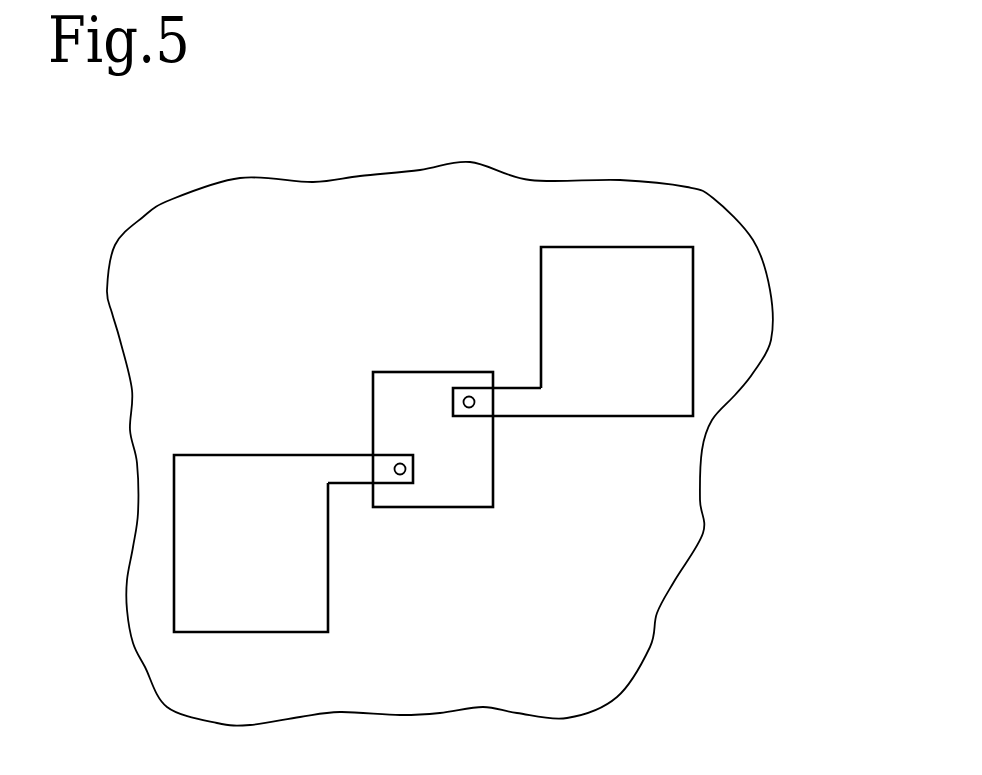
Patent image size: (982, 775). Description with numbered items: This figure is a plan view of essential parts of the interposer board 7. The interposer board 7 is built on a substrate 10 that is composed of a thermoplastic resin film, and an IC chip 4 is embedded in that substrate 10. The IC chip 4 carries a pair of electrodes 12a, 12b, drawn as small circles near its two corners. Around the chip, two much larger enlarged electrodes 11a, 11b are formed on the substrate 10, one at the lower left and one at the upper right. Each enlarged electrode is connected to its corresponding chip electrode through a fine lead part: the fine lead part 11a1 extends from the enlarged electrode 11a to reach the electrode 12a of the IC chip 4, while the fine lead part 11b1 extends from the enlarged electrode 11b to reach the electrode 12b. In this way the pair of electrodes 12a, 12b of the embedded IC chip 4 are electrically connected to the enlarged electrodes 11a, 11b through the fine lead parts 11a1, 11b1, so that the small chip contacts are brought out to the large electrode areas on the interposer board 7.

The interposer board 7 is at (698, 186).
The substrate 10 is at (665, 496).
The enlarged electrode 11a is at (193, 554).
The fine lead part 11a1 is at (350, 473).
The enlarged electrode 11b is at (673, 343).
The fine lead part 11b1 is at (517, 403).
The IC chip 4 is at (472, 490).
The electrode 12a is at (400, 462).
The electrode 12b is at (470, 394).